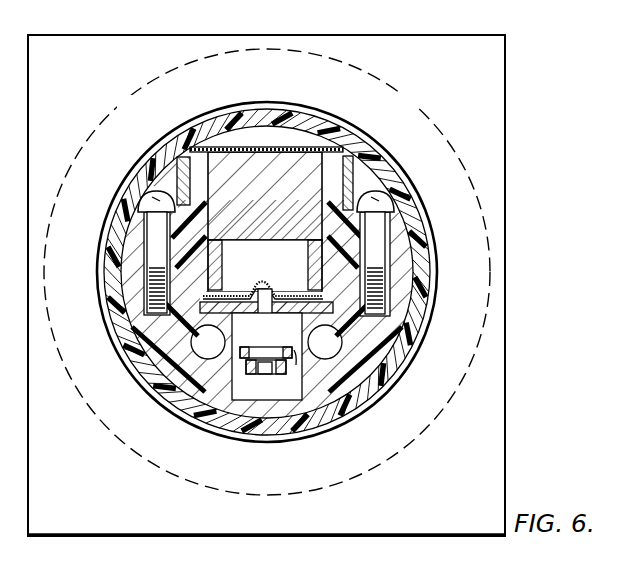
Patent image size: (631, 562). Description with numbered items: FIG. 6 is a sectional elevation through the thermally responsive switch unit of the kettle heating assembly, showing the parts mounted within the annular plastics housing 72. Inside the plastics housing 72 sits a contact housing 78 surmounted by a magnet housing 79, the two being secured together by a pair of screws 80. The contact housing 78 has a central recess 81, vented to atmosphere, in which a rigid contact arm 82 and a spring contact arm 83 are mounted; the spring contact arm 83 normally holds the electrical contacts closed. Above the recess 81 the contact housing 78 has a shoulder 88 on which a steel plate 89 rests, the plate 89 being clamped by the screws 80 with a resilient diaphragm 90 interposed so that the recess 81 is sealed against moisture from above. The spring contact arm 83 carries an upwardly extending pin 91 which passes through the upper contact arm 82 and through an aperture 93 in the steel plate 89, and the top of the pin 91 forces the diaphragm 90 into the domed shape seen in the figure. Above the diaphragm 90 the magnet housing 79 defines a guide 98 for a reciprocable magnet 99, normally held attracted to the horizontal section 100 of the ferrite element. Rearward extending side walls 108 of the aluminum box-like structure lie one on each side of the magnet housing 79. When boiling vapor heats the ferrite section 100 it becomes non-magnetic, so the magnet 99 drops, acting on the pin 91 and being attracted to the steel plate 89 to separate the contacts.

The plastics housing 72 is at (392, 370).
The contact housing 78 is at (392, 328).
The magnet housing 79 is at (397, 230).
The screws 80 is at (157, 247).
The central recess 81 is at (267, 396).
The rigid contact arm 82 is at (288, 343).
The spring contact arm 83 is at (249, 368).
The shoulder 88 is at (145, 362).
The steel plate 89 is at (150, 330).
The resilient diaphragm 90 is at (252, 287).
The pin 91 is at (200, 413).
The aperture 93 is at (253, 292).
The guide 98 is at (315, 275).
The magnet 99 is at (301, 173).
The horizontal section of ferrite element 100 is at (263, 148).
The side walls 108 is at (178, 182).